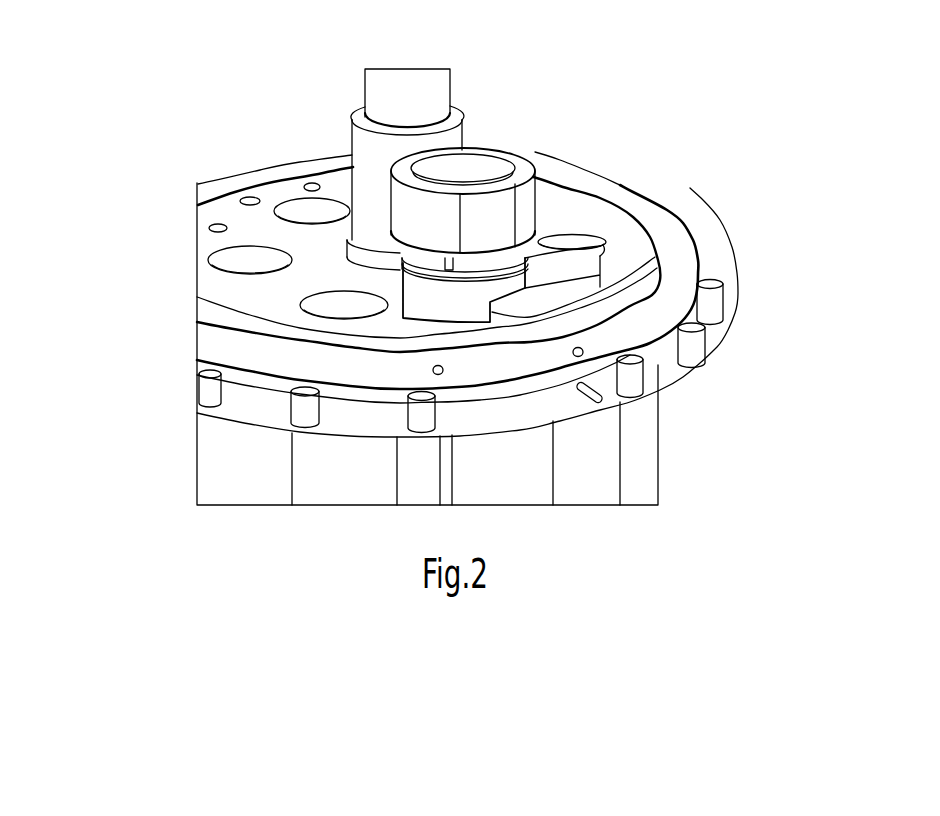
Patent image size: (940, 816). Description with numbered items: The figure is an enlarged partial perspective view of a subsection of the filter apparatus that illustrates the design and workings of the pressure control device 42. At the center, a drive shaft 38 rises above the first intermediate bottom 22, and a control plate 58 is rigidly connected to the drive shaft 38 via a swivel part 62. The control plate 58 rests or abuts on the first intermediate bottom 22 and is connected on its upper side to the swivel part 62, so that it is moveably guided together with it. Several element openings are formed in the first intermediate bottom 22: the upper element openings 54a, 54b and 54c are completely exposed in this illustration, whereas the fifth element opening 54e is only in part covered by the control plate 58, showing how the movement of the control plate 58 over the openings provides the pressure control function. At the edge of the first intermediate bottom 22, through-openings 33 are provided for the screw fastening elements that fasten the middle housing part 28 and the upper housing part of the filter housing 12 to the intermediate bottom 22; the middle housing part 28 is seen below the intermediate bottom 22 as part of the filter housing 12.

The filter housing 12 is at (742, 331).
The first intermediate bottom 22 is at (565, 207).
The middle housing part 28 is at (660, 463).
The through-openings 33 is at (722, 298).
The drive shaft 38 is at (437, 90).
The pressure control device 42 is at (532, 147).
The upper element opening 54a is at (335, 307).
The upper element opening 54b is at (232, 270).
The upper element opening 54c is at (307, 213).
The fifth element opening 54e is at (597, 247).
The control plate 58 is at (600, 258).
The swivel part 62 is at (462, 170).